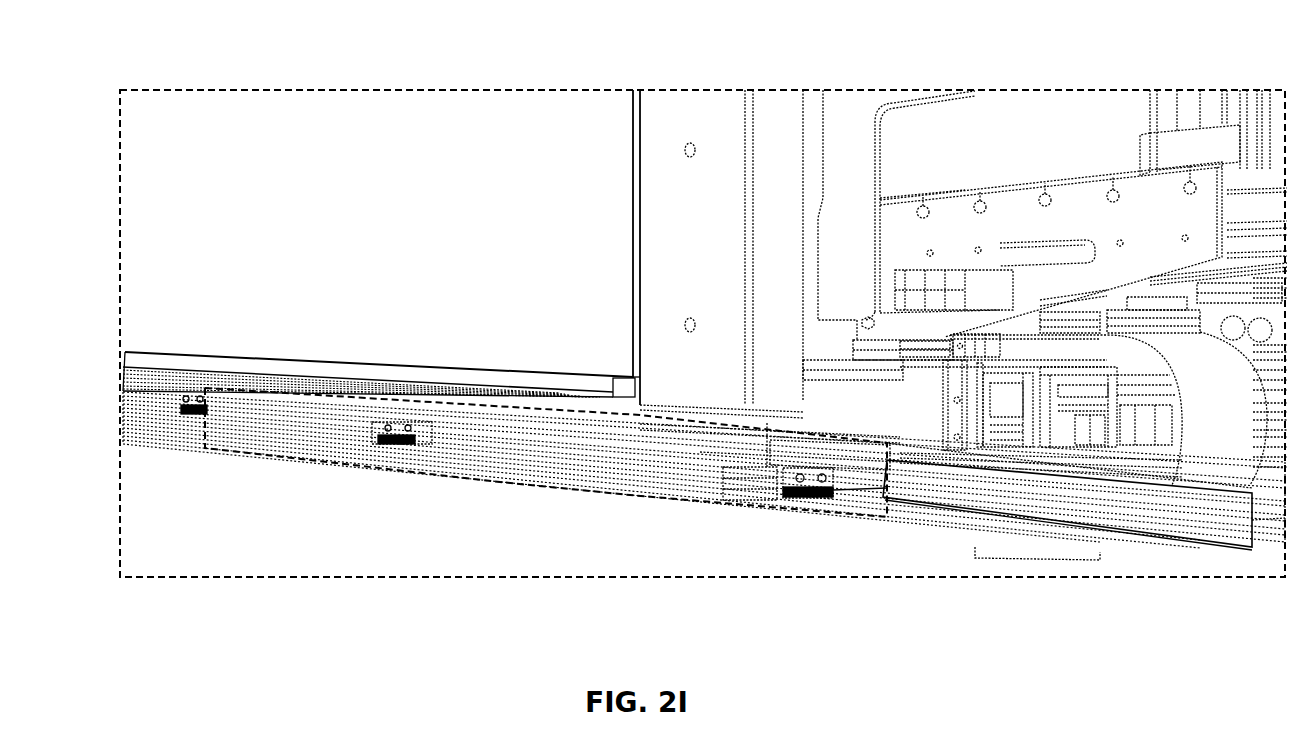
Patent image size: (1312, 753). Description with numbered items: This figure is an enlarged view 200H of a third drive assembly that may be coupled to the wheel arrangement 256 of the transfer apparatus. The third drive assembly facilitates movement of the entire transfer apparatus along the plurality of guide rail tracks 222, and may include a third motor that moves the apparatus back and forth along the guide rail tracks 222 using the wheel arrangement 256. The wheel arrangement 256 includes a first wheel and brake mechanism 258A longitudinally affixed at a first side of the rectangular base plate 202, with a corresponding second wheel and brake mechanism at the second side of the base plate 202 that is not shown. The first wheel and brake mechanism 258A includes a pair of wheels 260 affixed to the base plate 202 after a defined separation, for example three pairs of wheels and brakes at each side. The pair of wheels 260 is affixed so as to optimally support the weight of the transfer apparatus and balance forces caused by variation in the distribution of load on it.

The enlarged view 200H is at (1172, 89).
The wheel arrangement 256 is at (238, 453).
The first wheel and brake mechanism 258A is at (190, 405).
The pair of wheels 260 is at (774, 488).
The rectangular base plate 202 is at (806, 452).
The plurality of guide rail tracks 222 is at (918, 512).